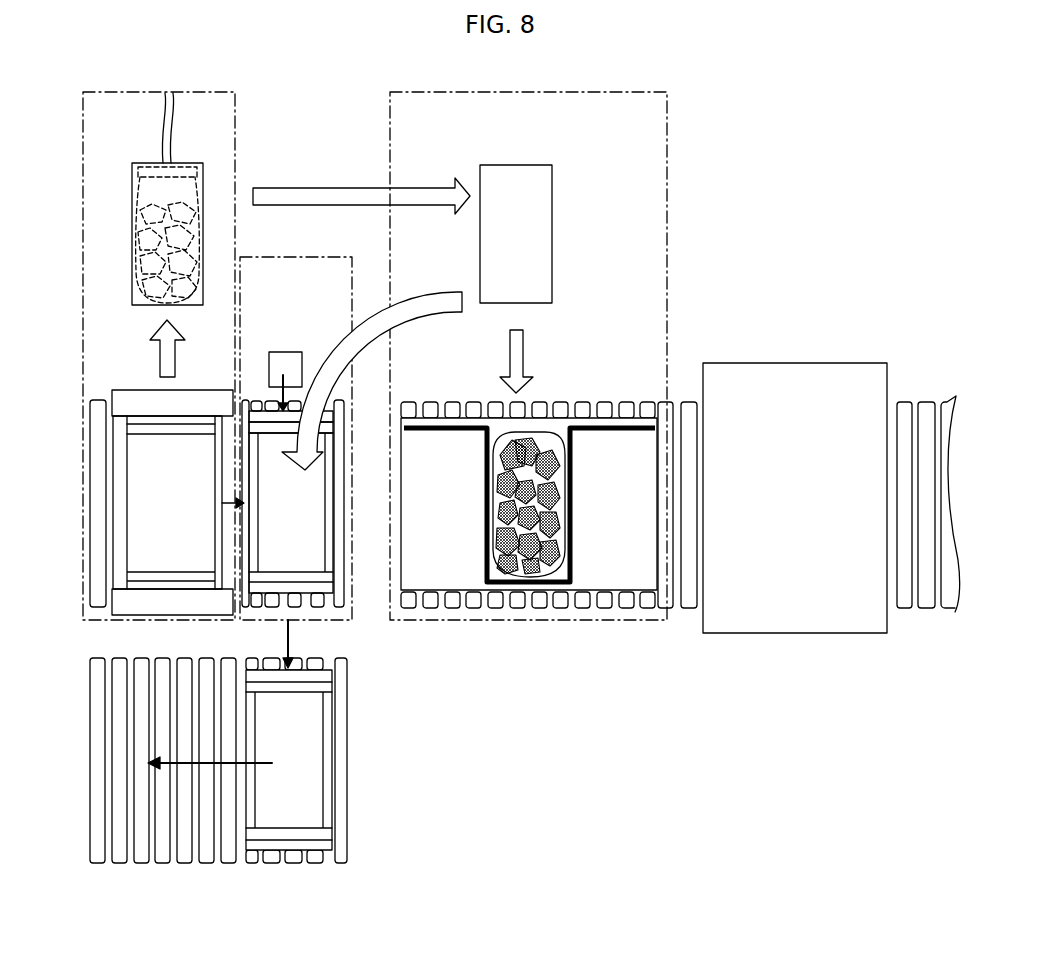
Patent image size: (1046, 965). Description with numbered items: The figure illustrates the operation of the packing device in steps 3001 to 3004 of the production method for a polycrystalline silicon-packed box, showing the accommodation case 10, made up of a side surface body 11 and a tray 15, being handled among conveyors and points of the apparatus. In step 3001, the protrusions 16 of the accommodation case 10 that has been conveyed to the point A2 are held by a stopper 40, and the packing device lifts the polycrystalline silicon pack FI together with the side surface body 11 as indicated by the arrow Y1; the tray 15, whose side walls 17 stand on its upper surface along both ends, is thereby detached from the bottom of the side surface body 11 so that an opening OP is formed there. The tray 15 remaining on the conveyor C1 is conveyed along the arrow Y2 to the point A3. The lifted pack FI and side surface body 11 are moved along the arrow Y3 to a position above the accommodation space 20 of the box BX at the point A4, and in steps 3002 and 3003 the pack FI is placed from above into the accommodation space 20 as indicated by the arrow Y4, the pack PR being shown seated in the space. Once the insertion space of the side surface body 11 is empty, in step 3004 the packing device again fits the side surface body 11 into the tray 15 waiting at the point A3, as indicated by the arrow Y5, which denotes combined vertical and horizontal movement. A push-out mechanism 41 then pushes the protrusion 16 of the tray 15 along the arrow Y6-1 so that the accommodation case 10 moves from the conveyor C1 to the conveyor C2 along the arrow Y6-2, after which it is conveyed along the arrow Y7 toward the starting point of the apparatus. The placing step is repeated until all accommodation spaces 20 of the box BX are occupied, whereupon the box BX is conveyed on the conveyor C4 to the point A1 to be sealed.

The step 3001 is at (203, 92).
The step 3002 is at (541, 344).
The step 3003 is at (576, 92).
The step 3004 is at (289, 257).
The side surface body 11 is at (187, 163).
The polycrystalline silicon pack FI is at (133, 190).
The accommodation case 10 is at (332, 762).
The tray 15 is at (130, 556).
The protrusions 16 is at (168, 420).
The side walls 17 is at (329, 428).
The accommodation space 20 is at (560, 435).
The stopper 40 is at (210, 390).
The push-out mechanism 41 is at (287, 352).
The point A1 is at (786, 361).
The point A2 is at (73, 392).
The point A3 is at (354, 627).
The point A4 is at (637, 632).
The box BX is at (452, 578).
The product pouch PR is at (580, 572).
The opening OP is at (535, 303).
The conveyor C1 is at (98, 400).
The conveyor C2 is at (338, 862).
The conveyor C4 is at (926, 405).
The arrow Y1 is at (160, 357).
The arrow Y2 is at (222, 501).
The arrow Y3 is at (324, 188).
The arrow Y4 is at (527, 355).
The arrow Y5 is at (436, 296).
The arrow Y6-1 is at (282, 388).
The arrow Y6-2 is at (284, 640).
The arrow Y7 is at (190, 768).